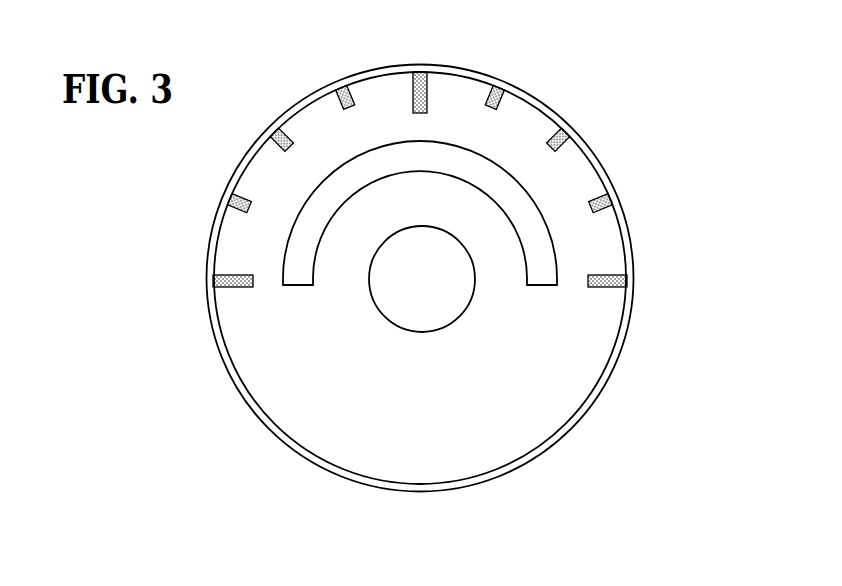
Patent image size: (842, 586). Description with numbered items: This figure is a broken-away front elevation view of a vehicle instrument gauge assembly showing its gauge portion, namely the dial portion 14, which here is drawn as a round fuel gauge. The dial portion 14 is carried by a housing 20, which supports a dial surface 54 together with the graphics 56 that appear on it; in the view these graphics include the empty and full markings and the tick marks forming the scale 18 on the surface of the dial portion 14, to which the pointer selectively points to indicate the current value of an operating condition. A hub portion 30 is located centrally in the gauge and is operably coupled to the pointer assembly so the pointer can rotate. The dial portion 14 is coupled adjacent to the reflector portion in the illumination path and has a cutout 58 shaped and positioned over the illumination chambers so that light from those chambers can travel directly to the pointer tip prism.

The dial portion 14 is at (584, 90).
The scale 18 is at (242, 291).
The housing 20 is at (620, 356).
The hub portion 30 is at (467, 305).
The dial surface 54 is at (582, 177).
The graphics 56 is at (624, 277).
The cutout 58 is at (332, 175).